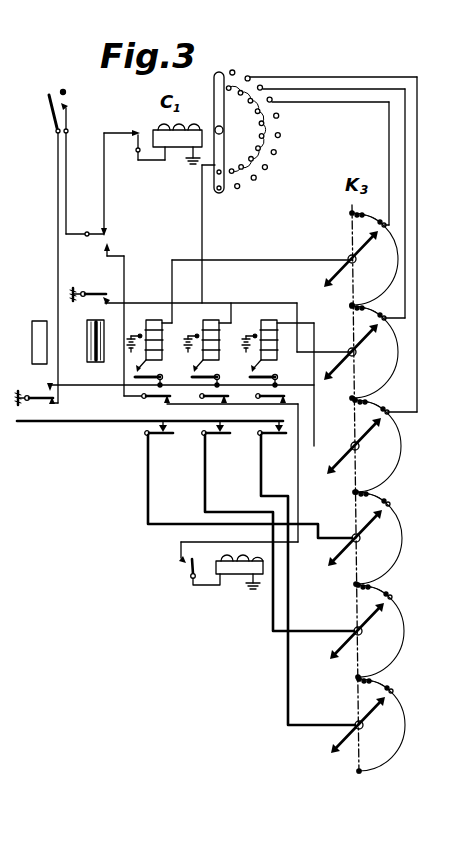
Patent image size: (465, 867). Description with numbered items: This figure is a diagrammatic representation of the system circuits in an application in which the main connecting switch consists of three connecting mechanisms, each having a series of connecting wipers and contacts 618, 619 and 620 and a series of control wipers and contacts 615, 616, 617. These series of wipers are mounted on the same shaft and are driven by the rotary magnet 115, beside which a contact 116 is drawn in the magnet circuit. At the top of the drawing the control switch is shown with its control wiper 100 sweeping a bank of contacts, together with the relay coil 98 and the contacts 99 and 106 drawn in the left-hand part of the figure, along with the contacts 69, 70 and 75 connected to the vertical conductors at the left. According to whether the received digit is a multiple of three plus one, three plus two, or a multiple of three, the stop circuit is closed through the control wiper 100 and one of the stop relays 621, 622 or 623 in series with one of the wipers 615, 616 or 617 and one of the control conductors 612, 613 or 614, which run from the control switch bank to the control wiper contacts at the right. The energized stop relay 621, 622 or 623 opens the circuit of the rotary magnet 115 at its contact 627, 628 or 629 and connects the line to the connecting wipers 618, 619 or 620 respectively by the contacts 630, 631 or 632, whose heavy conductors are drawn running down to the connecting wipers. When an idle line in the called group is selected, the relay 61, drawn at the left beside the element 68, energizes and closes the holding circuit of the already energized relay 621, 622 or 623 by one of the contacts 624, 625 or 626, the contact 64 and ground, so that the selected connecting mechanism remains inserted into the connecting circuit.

The switch 106 is at (73, 109).
The contact 99 is at (134, 138).
The relay coil 98 is at (177, 147).
The control wiper 100 is at (220, 150).
The contact 69 is at (96, 188).
The contact 70 is at (104, 318).
The contact 75 is at (183, 291).
The relay 61 is at (38, 338).
The element 68 is at (89, 340).
The contact 64 is at (36, 405).
The control conductor 612 is at (338, 104).
The control conductor 613 is at (322, 88).
The control conductor 614 is at (295, 77).
The control wiper and contacts 615 is at (360, 259).
The control wiper and contacts 616 is at (364, 352).
The control wiper and contacts 617 is at (372, 446).
The connecting wiper and contacts 618 is at (365, 538).
The connecting wiper and contacts 619 is at (366, 631).
The connecting wiper and contacts 620 is at (366, 725).
The stop relay 621 is at (155, 319).
The stop relay 622 is at (213, 319).
The stop relay 623 is at (272, 319).
The contact 624 is at (150, 374).
The contact 625 is at (207, 374).
The contact 626 is at (265, 374).
The contact 627 is at (147, 405).
The contact 628 is at (214, 405).
The contact 629 is at (232, 468).
The contact 630 is at (248, 479).
The contact 631 is at (278, 526).
The contact 632 is at (306, 573).
The contact 116 is at (230, 563).
The rotary magnet 115 is at (239, 580).